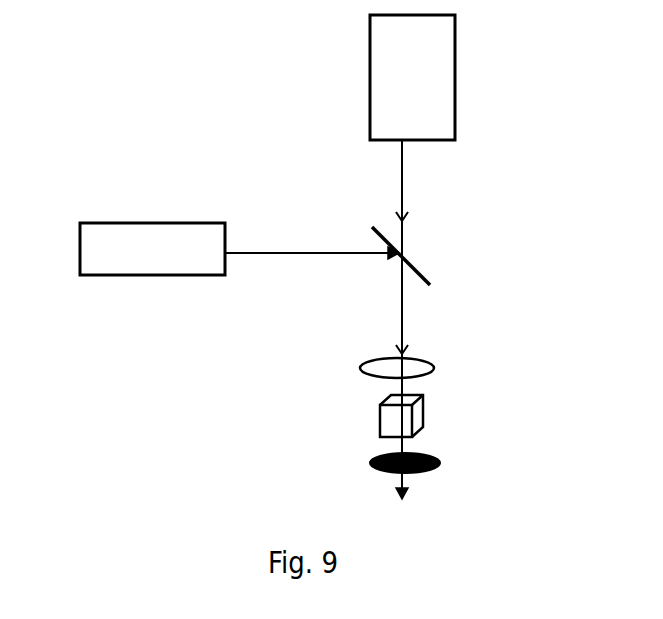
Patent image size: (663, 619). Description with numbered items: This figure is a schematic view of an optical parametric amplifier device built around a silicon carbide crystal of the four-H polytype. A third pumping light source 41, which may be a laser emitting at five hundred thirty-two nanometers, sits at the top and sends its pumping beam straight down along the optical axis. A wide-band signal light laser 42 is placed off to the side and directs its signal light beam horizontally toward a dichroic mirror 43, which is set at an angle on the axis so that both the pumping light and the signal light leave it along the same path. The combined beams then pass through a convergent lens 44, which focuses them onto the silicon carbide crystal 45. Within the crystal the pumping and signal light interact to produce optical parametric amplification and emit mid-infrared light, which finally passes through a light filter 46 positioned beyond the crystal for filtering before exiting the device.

The third pumping light source 41 is at (412, 77).
The wide-band signal light laser 42 is at (152, 249).
The dichroic mirror 43 is at (429, 256).
The convergent lens 44 is at (433, 367).
The 4H silicon carbide crystal 45 is at (443, 416).
The light filter 46 is at (438, 468).